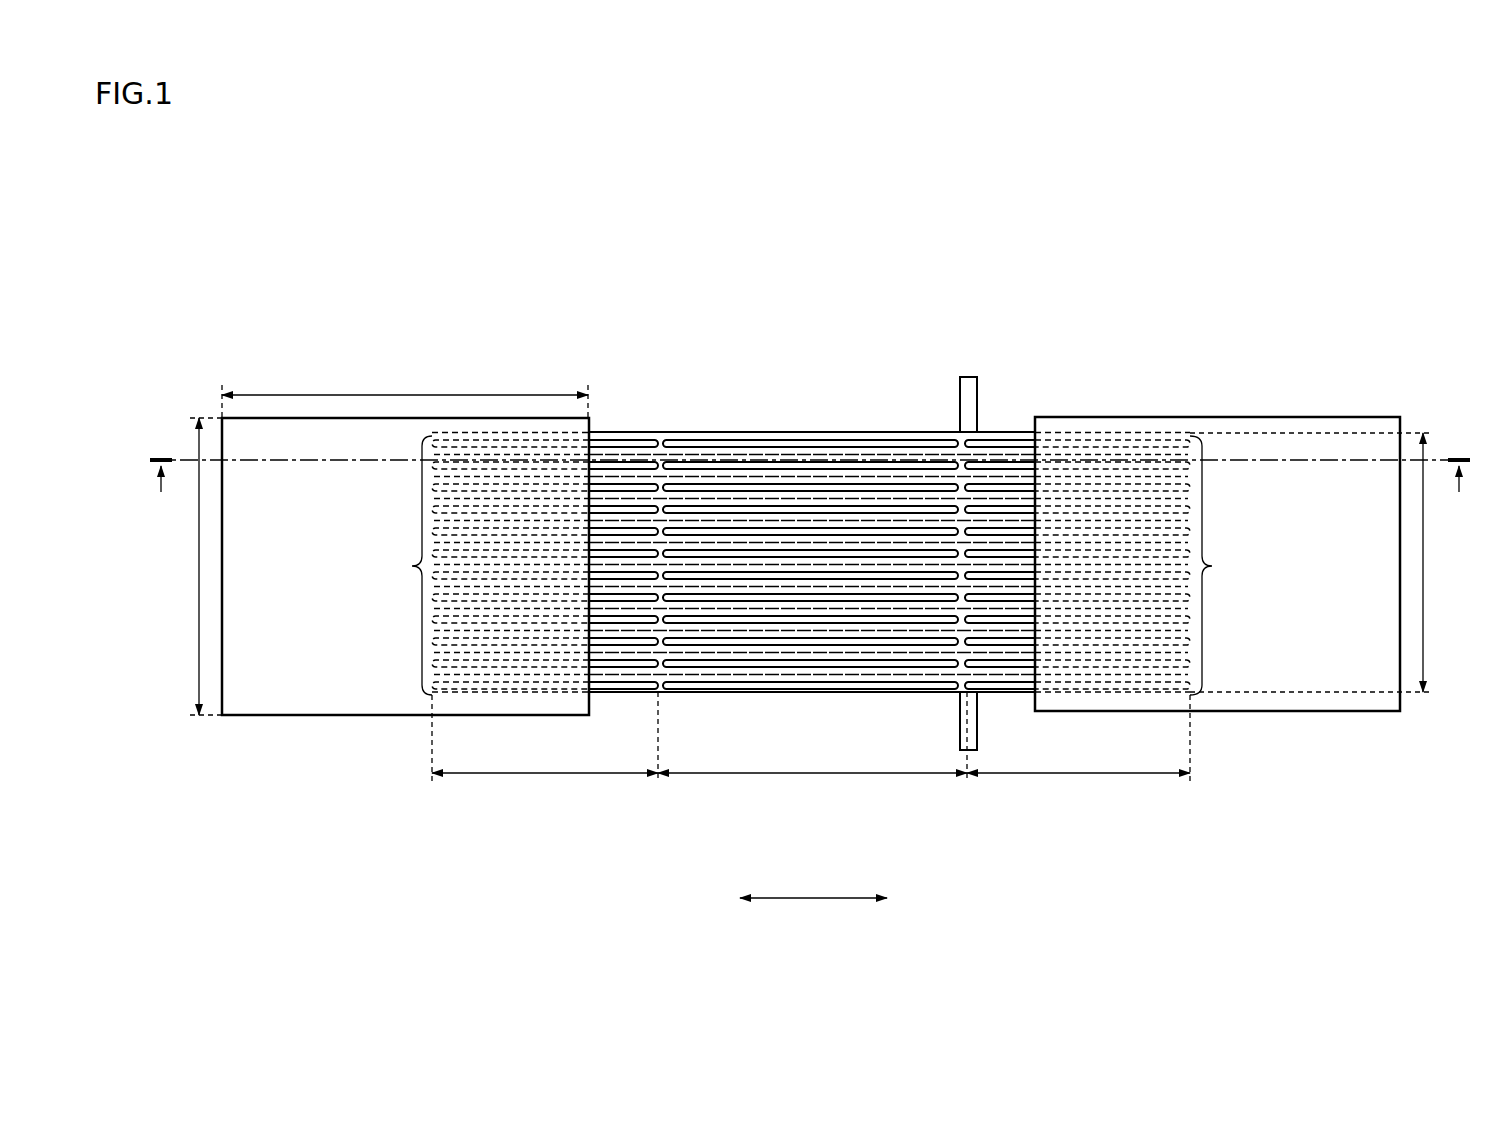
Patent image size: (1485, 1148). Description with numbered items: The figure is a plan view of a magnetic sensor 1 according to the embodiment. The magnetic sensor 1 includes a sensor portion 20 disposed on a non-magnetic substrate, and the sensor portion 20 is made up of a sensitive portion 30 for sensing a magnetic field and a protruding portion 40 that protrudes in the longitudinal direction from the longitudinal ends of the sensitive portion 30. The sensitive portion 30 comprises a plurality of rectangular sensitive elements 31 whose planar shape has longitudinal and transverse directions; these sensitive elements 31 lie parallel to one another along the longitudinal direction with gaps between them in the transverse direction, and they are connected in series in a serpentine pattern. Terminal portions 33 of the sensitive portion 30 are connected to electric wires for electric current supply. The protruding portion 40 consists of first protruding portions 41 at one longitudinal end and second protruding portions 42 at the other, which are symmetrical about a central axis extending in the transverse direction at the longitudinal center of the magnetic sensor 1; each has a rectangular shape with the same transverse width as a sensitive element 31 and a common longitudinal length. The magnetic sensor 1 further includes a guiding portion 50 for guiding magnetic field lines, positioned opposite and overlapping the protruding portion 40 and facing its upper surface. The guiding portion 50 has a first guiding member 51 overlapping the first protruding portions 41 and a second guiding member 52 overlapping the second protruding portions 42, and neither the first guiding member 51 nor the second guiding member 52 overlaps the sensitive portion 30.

The magnetic sensor 1 is at (1249, 172).
The sensor portion 20 is at (568, 251).
The sensitive portion 30 is at (828, 422).
The sensitive element 31 is at (893, 431).
The terminal portion 33 is at (967, 376).
The protruding portion 40 is at (611, 422).
The first protruding portion 41 is at (412, 566).
The second protruding portion 42 is at (1212, 566).
The guiding portion 50 is at (1380, 329).
The first guiding member 51 is at (263, 715).
The second guiding member 52 is at (1362, 711).